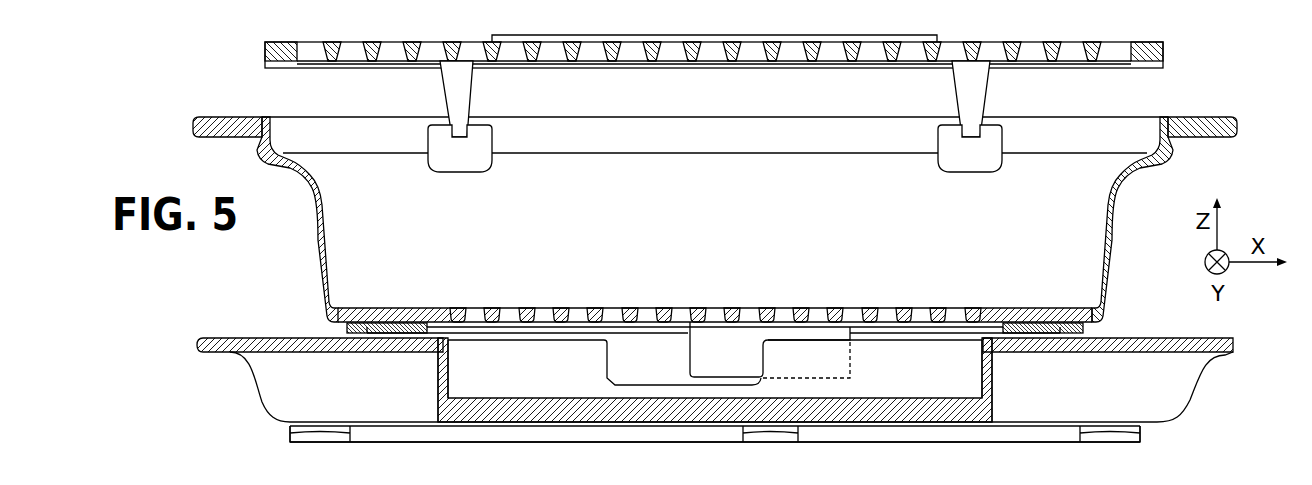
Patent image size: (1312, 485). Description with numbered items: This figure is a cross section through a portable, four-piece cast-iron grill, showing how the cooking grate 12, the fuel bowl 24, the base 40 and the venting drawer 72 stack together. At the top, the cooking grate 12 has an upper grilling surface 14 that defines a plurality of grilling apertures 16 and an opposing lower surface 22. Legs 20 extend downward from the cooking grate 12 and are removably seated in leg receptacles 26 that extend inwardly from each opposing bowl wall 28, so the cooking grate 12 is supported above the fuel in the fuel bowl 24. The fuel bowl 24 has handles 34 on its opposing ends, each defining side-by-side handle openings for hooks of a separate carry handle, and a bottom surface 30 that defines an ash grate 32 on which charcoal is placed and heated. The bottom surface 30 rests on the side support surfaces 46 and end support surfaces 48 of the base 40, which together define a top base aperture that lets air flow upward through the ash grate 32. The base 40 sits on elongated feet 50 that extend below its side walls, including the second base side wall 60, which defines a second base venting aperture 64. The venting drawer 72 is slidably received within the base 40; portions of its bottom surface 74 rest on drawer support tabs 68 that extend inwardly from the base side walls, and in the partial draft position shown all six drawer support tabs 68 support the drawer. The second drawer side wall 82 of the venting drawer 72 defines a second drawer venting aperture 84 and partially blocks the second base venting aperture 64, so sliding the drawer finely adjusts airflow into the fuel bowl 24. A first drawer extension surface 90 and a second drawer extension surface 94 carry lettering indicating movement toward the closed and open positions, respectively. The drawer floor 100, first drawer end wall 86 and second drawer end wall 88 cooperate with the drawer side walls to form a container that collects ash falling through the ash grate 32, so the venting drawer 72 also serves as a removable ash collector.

The cooking grate 12 is at (257, 56).
The upper grilling surface 14 is at (448, 42).
The grilling apertures 16 is at (353, 55).
The legs 20 is at (444, 94).
The lower surface 22 is at (535, 70).
The fuel bowl 24 is at (312, 244).
The leg receptacles 26 is at (428, 142).
The bowl wall 28 is at (1115, 250).
The bottom surface 30 is at (1015, 305).
The ash grate 32 is at (575, 308).
The handles 34 is at (193, 127).
The base 40 is at (282, 432).
The side support surfaces 46 is at (505, 308).
The end support surfaces 48 is at (385, 320).
The elongated feet 50 is at (950, 443).
The second base side wall 60 is at (625, 362).
The second base venting aperture 64 is at (742, 348).
The drawer support tabs 68 is at (357, 436).
The venting drawer 72 is at (248, 383).
The bottom surface 74 is at (412, 427).
The second drawer side wall 82 is at (519, 374).
The second drawer venting aperture 84 is at (656, 348).
The first drawer end wall 86 is at (438, 380).
The second drawer end wall 88 is at (992, 380).
The first drawer extension surface 90 is at (267, 338).
The second drawer extension surface 94 is at (1170, 338).
The drawer floor 100 is at (888, 383).